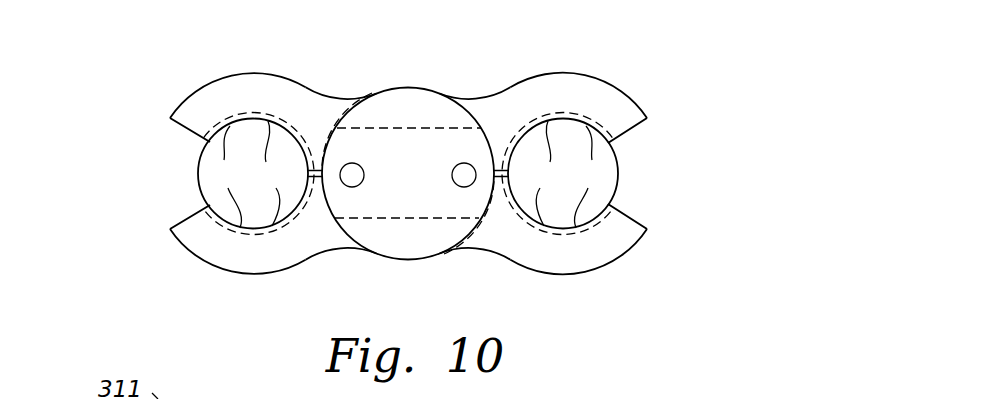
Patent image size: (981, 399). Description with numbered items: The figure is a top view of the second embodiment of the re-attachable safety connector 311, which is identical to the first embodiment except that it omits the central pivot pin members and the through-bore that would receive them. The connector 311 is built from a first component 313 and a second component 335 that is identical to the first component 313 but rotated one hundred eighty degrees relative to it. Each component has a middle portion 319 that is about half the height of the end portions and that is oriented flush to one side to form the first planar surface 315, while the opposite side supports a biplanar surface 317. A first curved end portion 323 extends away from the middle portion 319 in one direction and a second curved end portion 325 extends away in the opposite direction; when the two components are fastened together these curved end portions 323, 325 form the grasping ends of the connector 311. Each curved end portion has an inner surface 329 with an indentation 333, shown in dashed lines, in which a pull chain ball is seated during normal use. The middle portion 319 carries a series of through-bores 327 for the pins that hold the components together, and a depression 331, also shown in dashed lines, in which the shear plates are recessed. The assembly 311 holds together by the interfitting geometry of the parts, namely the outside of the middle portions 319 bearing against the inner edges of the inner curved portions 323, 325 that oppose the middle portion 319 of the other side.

The re-attachable safety connector 311 is at (194, 63).
The first component 313 is at (195, 137).
The first planar surface 315 is at (192, 98).
The biplanar surface 317 is at (203, 240).
The middle portion 319 is at (333, 62).
The first curved end portion 323 is at (322, 270).
The second curved end portion 325 is at (494, 270).
The through-bores 327 is at (357, 170).
The inner surface 329 is at (406, 177).
The depression 331 is at (343, 140).
The indentation 333 is at (409, 173).
The second component 335 is at (622, 140).